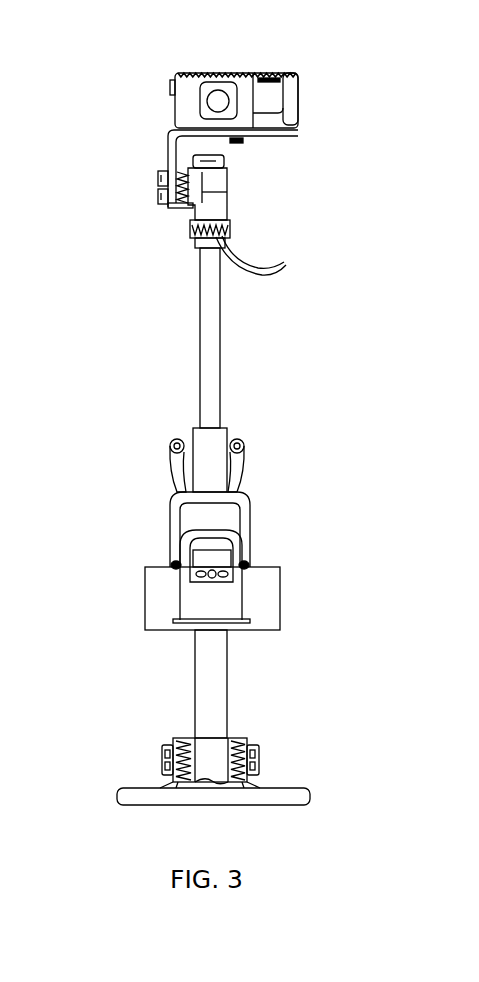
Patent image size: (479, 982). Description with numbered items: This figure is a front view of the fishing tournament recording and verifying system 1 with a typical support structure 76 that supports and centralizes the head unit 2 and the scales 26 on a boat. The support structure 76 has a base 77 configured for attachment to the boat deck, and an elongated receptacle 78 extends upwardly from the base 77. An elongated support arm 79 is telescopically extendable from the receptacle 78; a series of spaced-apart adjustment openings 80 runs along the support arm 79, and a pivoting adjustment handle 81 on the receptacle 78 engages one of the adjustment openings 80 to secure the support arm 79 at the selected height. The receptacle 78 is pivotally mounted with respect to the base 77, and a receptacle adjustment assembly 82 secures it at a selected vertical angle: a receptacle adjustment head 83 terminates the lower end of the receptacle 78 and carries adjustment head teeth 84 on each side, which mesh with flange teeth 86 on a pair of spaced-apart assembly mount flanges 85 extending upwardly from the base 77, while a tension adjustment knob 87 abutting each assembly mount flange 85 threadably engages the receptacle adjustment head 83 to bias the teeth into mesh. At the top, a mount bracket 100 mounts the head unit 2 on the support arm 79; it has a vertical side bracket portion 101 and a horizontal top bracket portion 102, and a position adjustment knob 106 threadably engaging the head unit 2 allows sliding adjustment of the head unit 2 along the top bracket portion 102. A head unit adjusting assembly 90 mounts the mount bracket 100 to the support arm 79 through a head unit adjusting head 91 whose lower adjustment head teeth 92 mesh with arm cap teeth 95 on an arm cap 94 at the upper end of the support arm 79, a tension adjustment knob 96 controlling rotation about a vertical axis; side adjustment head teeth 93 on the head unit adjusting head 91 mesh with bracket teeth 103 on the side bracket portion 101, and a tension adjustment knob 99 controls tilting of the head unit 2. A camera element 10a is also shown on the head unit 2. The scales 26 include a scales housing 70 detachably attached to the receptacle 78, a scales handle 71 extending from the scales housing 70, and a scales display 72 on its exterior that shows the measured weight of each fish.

The system 1 is at (126, 70).
The head unit 2 is at (160, 105).
The camera 10a is at (226, 84).
The scales 26 is at (138, 578).
The scales housing 70 is at (268, 602).
The scales handle 71 is at (250, 507).
The scales display 72 is at (222, 555).
The support structure 76 is at (155, 324).
The base 77 is at (308, 795).
The receptacle 78 is at (212, 678).
The support arm 79 is at (212, 338).
The adjustment openings 80 is at (200, 397).
The adjustment handle 81 is at (172, 468).
The receptacle adjustment assembly 82 is at (181, 740).
The receptacle adjustment head 83 is at (208, 752).
The adjustment head teeth 84 is at (165, 758).
The assembly mount flanges 85 is at (157, 806).
The flange teeth 86 is at (242, 828).
The tension adjustment knob 87 is at (163, 770).
The head unit adjusting assembly 90 is at (250, 208).
The head unit adjusting head 91 is at (227, 160).
The lower adjustment head teeth 92 is at (268, 258).
The side adjustment head teeth 93 is at (177, 200).
The arm cap 94 is at (195, 243).
The arm cap teeth 95 is at (233, 231).
The tension adjustment knob 96 is at (190, 165).
The tension adjustment knob 99 is at (157, 177).
The mount bracket 100 is at (160, 142).
The side bracket portion 101 is at (155, 143).
The top bracket portion 102 is at (178, 158).
The bracket teeth 103 is at (208, 195).
The position adjustment knob 106 is at (243, 140).